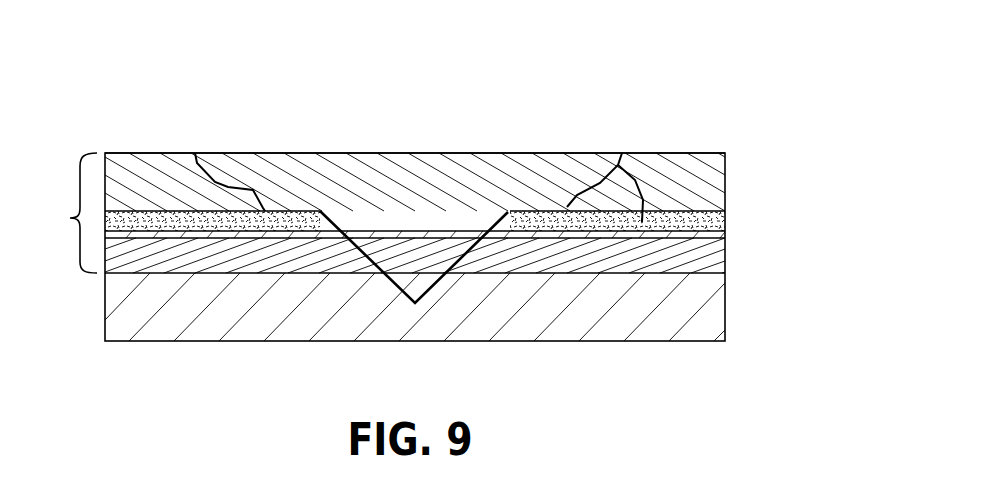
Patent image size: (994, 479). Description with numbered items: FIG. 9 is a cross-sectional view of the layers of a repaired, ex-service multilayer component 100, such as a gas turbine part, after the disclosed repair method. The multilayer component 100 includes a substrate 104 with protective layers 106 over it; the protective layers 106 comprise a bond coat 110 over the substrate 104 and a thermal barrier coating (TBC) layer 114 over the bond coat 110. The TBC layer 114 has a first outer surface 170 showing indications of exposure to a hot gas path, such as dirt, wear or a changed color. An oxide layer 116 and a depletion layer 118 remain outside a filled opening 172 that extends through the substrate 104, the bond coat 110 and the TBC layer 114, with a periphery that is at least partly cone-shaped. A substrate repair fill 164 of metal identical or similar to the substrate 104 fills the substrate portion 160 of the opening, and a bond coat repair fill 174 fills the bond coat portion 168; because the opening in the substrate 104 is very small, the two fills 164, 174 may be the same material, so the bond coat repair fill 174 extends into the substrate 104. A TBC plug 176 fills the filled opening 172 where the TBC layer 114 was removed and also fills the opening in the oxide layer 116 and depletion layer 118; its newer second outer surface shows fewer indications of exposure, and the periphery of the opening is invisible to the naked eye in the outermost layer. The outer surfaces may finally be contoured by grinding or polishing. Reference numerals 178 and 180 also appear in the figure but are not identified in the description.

The multilayer component 100 is at (152, 90).
The substrate 104 is at (713, 303).
The protective layer(s) 106 is at (56, 213).
The bond coat 110 is at (705, 248).
The TBC layer 114 is at (685, 160).
The oxide layer 116 is at (615, 152).
The depletion layer 118 is at (710, 232).
The substrate portion 160 is at (432, 290).
The substrate repair fill 164 is at (390, 298).
The bond coat portion 168 is at (482, 236).
The first outer surface 170 is at (128, 153).
The filled opening 172 is at (503, 213).
The bond coat repair fill 174 is at (397, 247).
The TBC plug 176 is at (375, 158).
The top surface 178 is at (502, 152).
The direction arrow 180 is at (330, 246).